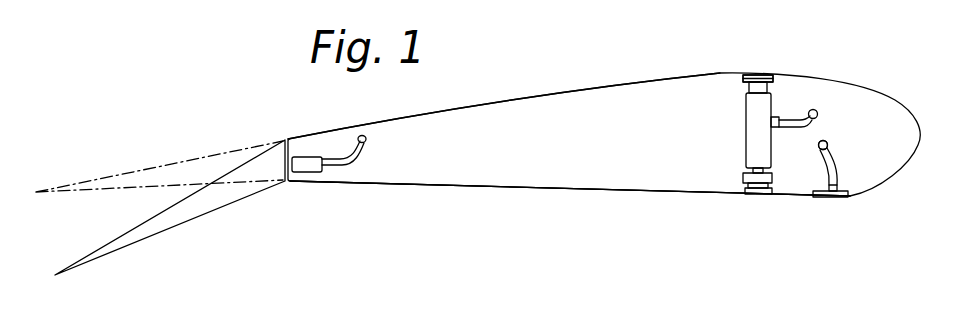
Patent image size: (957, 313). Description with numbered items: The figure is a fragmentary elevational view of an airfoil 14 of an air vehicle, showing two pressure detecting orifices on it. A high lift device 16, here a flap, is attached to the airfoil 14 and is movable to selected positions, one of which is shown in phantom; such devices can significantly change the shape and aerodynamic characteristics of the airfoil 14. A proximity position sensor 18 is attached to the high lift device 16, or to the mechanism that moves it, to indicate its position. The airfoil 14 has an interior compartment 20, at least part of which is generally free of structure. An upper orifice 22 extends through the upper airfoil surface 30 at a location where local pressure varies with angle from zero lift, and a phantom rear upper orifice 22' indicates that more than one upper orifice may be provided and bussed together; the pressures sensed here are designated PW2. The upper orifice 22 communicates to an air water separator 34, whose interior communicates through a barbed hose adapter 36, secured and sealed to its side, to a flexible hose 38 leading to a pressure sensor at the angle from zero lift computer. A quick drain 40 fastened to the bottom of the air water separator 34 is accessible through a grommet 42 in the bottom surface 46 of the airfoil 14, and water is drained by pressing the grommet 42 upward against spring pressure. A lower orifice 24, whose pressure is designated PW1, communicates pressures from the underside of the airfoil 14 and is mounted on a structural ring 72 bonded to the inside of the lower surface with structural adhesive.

The airfoil 14 is at (488, 206).
The high lift device 16 is at (138, 235).
The proximity position sensor 18 is at (308, 172).
The interior compartment 20 is at (623, 160).
The upper orifice 22 is at (786, 49).
The rear upper orifice 22' is at (299, 114).
The lower orifice 24 is at (853, 199).
The upper airfoil surface 30 is at (637, 82).
The air water separator 34 is at (752, 152).
The barbed hose adapter 36 is at (781, 116).
The flexible hose 38 is at (804, 112).
The quick drain 40 is at (764, 191).
The grommet 42 is at (748, 202).
The bottom surface 46 is at (633, 192).
The structural ring 72 is at (813, 201).
The lower surface pressure PW1 is at (831, 195).
The upper surface pressure PW2 is at (752, 57).